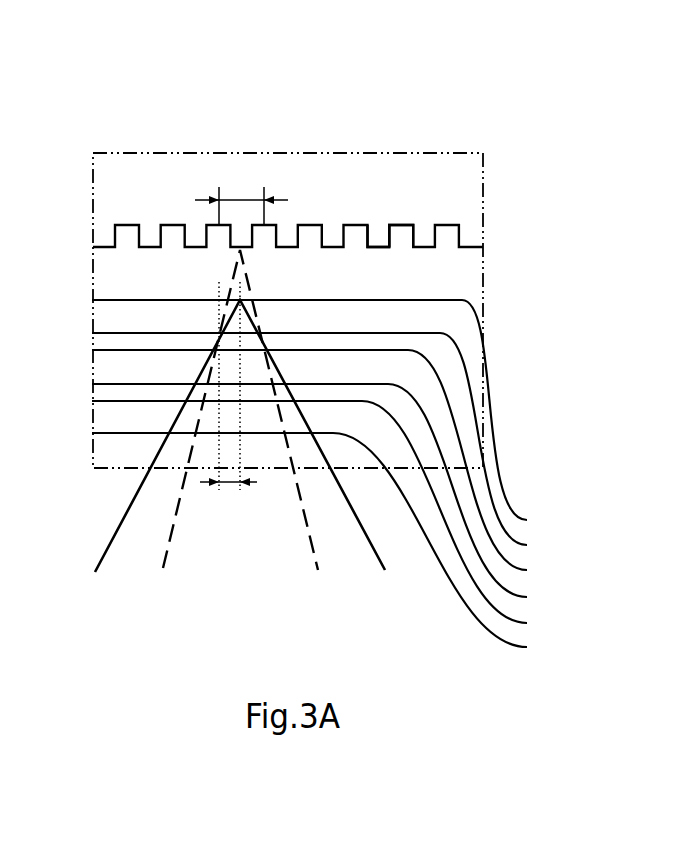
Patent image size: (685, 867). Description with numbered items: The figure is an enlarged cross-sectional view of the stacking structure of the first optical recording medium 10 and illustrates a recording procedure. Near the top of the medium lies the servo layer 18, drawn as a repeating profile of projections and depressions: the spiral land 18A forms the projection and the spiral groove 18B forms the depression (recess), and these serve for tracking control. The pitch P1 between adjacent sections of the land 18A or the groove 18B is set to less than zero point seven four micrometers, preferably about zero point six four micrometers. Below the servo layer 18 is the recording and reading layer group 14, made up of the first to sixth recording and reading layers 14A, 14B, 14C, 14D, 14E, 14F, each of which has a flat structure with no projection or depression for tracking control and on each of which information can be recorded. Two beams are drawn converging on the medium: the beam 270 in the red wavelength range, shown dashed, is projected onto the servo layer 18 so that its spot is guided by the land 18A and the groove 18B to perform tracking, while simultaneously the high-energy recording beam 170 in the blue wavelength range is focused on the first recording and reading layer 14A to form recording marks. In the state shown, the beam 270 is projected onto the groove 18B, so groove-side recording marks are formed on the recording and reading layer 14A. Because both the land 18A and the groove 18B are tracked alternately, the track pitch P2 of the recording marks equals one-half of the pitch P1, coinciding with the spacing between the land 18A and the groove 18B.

The first optical recording medium 10 is at (300, 127).
The servo layer 18 is at (582, 73).
The land 18A is at (402, 225).
The groove 18B is at (378, 247).
The pitch P1 is at (241, 200).
The track pitch P2 is at (233, 483).
The recording and reading layer group 14 is at (607, 510).
The first recording and reading layer 14A is at (339, 416).
The second recording and reading layer 14B is at (339, 446).
The third recording and reading layer 14C is at (339, 467).
The fourth recording and reading layer 14D is at (340, 497).
The fifth recording and reading layer 14E is at (338, 518).
The sixth recording and reading layer 14F is at (338, 547).
The recording beam 170 is at (378, 558).
The beam 270 is at (298, 500).